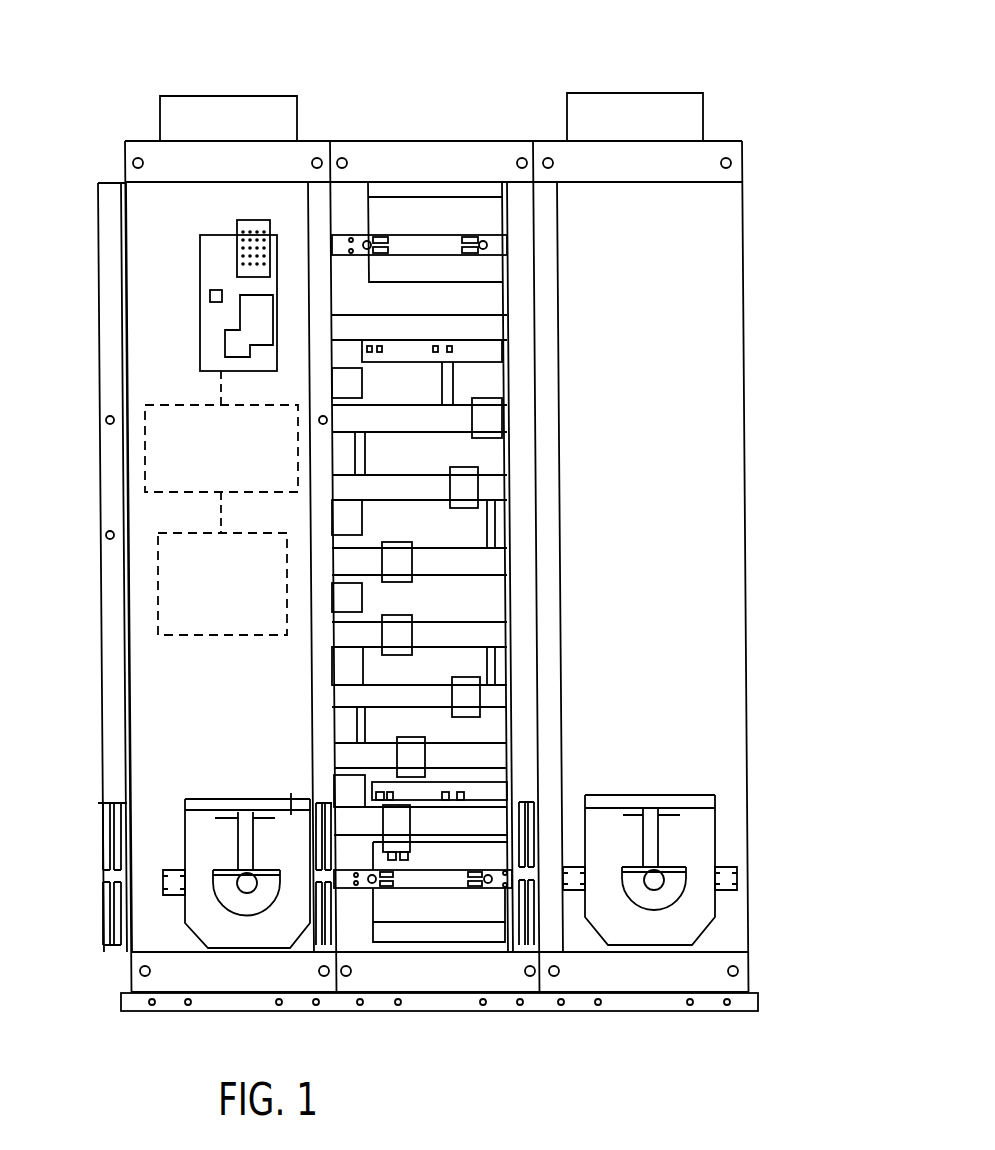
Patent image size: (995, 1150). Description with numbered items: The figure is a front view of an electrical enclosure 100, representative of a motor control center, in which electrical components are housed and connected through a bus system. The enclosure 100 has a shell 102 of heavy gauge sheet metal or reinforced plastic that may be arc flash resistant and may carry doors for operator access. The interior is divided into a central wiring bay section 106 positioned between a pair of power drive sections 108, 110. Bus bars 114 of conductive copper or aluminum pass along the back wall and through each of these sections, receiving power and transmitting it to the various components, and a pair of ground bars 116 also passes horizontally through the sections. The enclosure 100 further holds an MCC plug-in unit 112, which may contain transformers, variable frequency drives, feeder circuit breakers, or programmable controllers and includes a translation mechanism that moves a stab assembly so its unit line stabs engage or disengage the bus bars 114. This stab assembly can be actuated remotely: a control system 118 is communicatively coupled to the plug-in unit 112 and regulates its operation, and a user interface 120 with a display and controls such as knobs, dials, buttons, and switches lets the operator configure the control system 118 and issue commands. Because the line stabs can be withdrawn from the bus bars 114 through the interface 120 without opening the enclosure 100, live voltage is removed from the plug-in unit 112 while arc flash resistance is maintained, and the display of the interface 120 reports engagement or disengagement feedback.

The electrical enclosure 100 is at (744, 58).
The shell 102 is at (733, 580).
The wiring bay section 106 is at (408, 115).
The power drive section 108 is at (652, 1040).
The power drive section 110 is at (238, 80).
The MCC plug-in unit 112 is at (158, 583).
The bus bars 114 is at (457, 415).
The ground bars 116 is at (428, 240).
The control system 118 is at (145, 449).
The user interface 120 is at (200, 303).